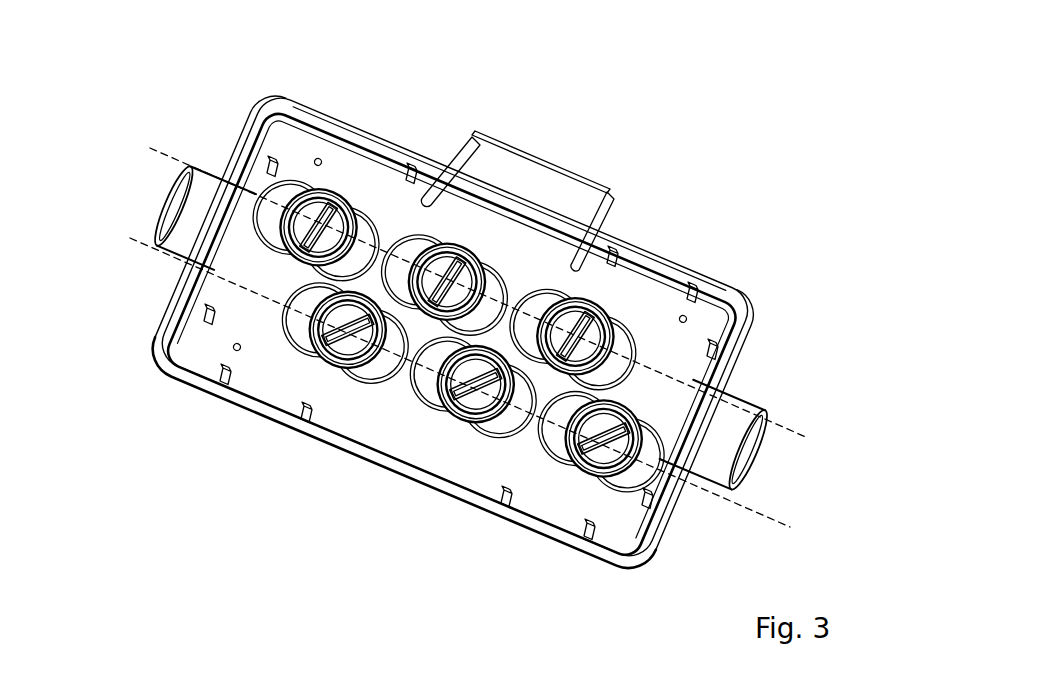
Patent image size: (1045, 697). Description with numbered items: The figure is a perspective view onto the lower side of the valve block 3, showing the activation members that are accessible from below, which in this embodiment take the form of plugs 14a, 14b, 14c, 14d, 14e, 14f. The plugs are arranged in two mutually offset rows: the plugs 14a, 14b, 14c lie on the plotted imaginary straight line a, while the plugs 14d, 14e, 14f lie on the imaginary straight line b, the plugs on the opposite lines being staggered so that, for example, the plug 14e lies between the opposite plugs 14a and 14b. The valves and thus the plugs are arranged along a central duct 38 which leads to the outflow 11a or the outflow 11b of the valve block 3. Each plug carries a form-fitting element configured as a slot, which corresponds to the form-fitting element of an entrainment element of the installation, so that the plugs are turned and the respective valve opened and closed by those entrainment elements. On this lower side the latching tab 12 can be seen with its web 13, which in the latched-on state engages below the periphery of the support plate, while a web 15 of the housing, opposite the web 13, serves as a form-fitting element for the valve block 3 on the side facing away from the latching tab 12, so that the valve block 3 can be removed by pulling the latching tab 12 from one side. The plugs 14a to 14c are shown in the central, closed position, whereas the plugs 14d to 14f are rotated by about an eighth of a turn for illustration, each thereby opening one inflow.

The valve block 3 is at (133, 538).
The outflow 11a is at (200, 213).
The outflow 11b is at (727, 440).
The latching tab 12 is at (515, 166).
The web 13 is at (473, 138).
The plug 14a is at (582, 326).
The plug 14b is at (458, 262).
The plug 14c is at (330, 210).
The plug 14d is at (593, 450).
The plug 14e is at (477, 385).
The plug 14f is at (335, 343).
The web 15 is at (405, 437).
The central duct 38 is at (345, 258).
The imaginary straight line a is at (497, 302).
The imaginary straight line b is at (474, 394).